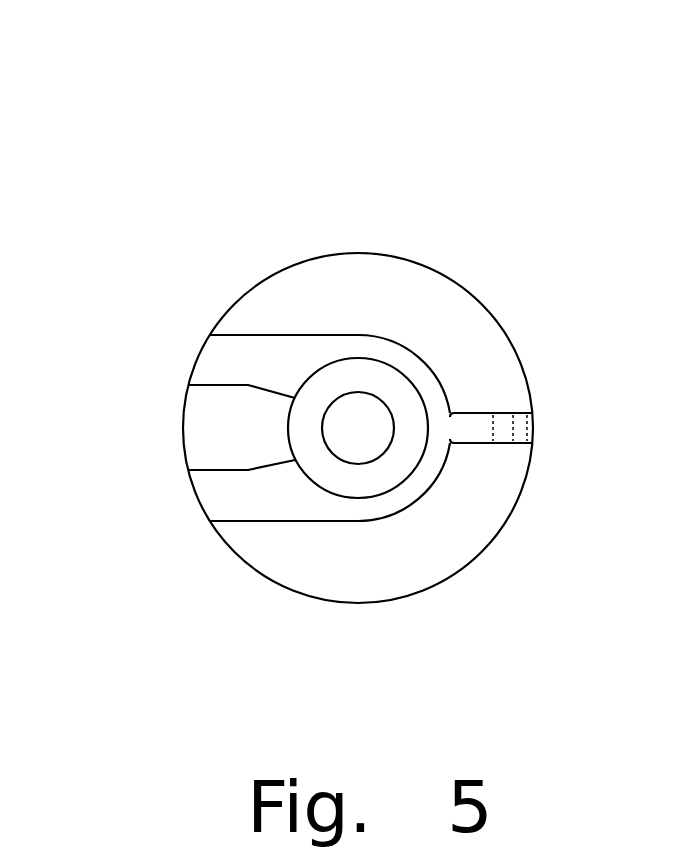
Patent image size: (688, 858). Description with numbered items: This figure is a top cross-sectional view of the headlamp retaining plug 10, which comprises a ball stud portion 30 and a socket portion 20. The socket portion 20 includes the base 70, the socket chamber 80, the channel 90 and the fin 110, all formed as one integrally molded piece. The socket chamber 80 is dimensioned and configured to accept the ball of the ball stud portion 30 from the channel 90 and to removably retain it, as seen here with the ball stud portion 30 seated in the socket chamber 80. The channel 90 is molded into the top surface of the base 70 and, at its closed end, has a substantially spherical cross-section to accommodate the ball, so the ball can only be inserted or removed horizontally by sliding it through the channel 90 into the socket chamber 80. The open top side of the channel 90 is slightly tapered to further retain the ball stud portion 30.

The headlamp retaining plug 10 is at (145, 128).
The socket portion 20 is at (347, 253).
The ball stud portion 30 is at (357, 428).
The base 70 is at (487, 517).
The socket chamber 80 is at (357, 480).
The channel 90 is at (200, 442).
The fin 110 is at (527, 428).